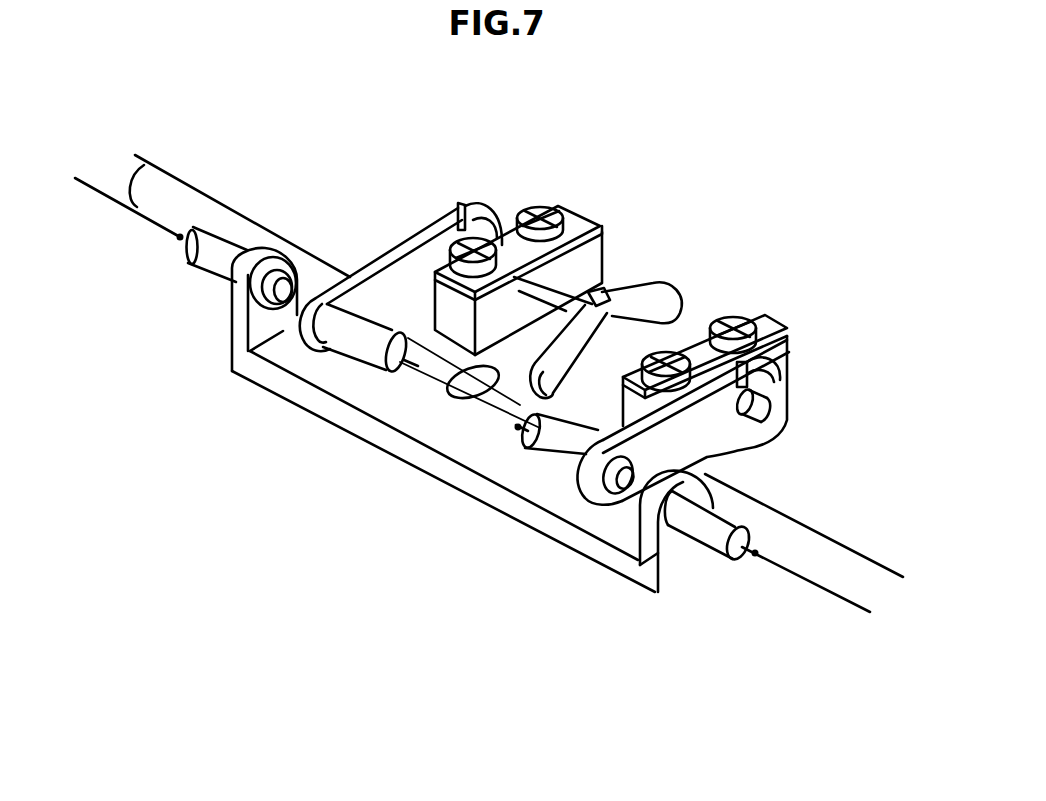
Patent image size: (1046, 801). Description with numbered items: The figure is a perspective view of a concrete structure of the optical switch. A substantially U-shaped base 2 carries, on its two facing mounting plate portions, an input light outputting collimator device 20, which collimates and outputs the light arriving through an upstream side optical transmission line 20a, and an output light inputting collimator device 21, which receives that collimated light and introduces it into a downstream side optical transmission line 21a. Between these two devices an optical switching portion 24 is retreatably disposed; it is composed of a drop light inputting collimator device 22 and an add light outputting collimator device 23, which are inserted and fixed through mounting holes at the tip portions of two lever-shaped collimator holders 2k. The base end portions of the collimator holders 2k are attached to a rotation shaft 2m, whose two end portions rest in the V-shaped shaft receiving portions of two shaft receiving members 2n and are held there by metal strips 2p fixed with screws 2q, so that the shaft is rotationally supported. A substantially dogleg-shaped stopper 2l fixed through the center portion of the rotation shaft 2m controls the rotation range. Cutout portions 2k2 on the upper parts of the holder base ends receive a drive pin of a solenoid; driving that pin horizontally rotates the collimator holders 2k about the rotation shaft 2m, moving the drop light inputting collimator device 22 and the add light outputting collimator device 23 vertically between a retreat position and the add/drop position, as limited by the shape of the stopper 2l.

The base 2 is at (412, 462).
The collimator holder 2k is at (412, 228).
The cutout portion 2k2 is at (770, 370).
The stopper 2l is at (622, 290).
The rotation shaft 2m is at (670, 323).
The shaft receiving member 2n is at (600, 235).
The metal strip 2p is at (503, 240).
The screw 2q is at (462, 210).
The input light outputting collimator device 20 is at (219, 250).
The upstream side optical transmission line 20a is at (157, 163).
The output light inputting collimator device 21 is at (718, 540).
The downstream side optical transmission line 21a is at (813, 583).
The drop light inputting collimator device 22 is at (360, 348).
The add light outputting collimator device 23 is at (548, 443).
The optical switching portion 24 is at (379, 383).